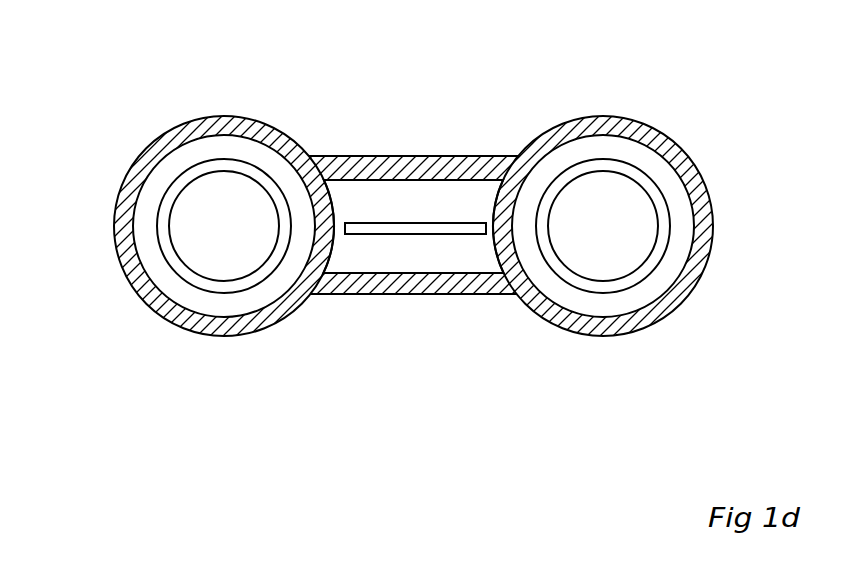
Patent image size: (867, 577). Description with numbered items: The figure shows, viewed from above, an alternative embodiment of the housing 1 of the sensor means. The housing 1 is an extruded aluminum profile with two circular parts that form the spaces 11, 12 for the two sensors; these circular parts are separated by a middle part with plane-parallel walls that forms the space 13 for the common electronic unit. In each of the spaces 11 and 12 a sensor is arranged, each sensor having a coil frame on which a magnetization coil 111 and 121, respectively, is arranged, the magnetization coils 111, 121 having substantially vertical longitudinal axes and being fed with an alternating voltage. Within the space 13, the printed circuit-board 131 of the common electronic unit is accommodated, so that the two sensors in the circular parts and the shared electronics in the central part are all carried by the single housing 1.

The housing 1 is at (450, 122).
The space 11 is at (178, 288).
The space 12 is at (618, 303).
The space 13 is at (380, 263).
The magnetization coil 111 is at (160, 226).
The magnetization coil 121 is at (660, 217).
The printed circuit-board 131 is at (392, 227).